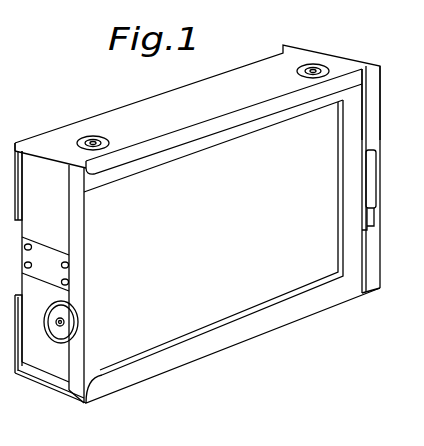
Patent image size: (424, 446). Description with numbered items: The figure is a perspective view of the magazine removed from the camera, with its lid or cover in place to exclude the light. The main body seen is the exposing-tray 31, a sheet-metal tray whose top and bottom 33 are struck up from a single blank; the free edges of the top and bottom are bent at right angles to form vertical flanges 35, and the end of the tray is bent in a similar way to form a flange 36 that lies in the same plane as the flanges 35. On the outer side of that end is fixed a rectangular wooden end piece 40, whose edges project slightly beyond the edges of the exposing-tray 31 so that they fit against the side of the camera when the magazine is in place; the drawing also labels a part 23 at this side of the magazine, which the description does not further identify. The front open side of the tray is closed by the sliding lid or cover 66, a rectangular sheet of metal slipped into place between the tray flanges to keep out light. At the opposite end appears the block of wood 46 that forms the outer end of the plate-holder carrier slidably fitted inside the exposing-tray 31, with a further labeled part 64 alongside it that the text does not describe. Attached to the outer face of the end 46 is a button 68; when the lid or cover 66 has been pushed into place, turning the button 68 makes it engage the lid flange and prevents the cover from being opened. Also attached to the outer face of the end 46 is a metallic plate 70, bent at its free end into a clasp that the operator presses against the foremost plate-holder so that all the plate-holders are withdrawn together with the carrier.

The side wall / right column 23 is at (393, 179).
The exposing-tray 31 is at (197, 106).
The top and bottom 33 is at (203, 107).
The vertical flanges 35 is at (233, 243).
The flange 36 is at (362, 178).
The wooden end piece 40 is at (380, 96).
The block of wood 46 is at (50, 273).
The front frame bezel 64 is at (78, 270).
The sliding lid or cover 66 is at (213, 237).
The button 68 is at (48, 324).
The metallic plate 70 is at (45, 264).